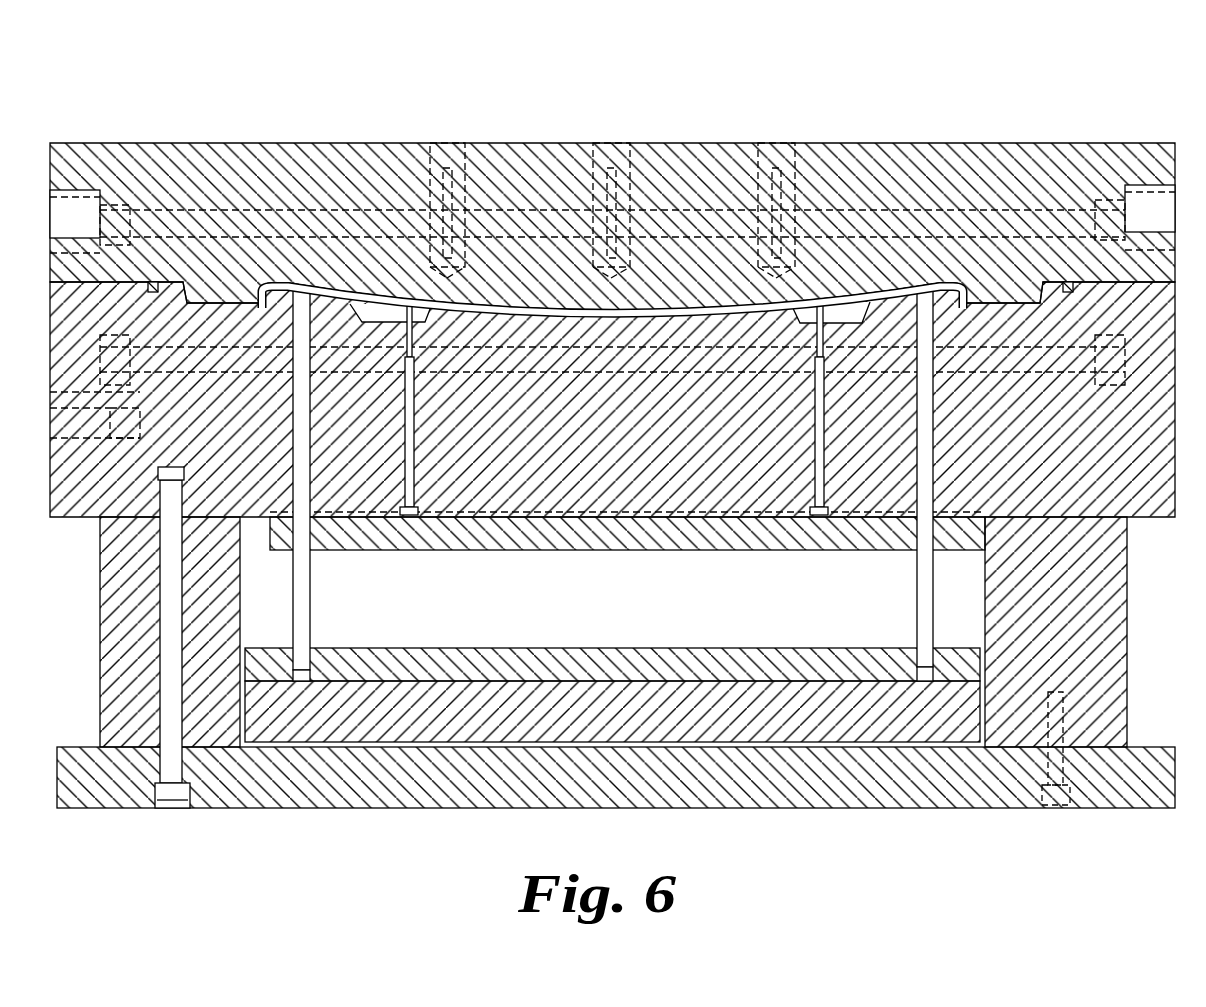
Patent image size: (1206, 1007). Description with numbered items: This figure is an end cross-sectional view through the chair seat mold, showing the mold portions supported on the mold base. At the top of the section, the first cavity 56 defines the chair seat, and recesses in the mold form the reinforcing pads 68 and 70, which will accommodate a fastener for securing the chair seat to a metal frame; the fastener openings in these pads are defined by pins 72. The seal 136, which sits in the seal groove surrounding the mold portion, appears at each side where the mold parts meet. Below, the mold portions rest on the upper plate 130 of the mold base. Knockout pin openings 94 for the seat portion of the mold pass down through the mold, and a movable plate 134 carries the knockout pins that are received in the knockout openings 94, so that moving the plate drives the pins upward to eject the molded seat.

The first cavity 56 is at (647, 318).
The reinforcing pad 68 is at (852, 316).
The reinforcing pad 70 is at (378, 318).
The pins 72 is at (423, 437).
The knockout pin openings 94 is at (305, 452).
The upper plate 130 is at (690, 535).
The movable plate 134 is at (598, 655).
The seal 136 is at (150, 282).